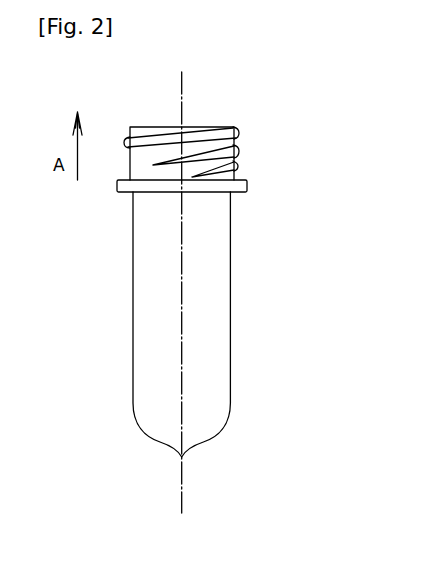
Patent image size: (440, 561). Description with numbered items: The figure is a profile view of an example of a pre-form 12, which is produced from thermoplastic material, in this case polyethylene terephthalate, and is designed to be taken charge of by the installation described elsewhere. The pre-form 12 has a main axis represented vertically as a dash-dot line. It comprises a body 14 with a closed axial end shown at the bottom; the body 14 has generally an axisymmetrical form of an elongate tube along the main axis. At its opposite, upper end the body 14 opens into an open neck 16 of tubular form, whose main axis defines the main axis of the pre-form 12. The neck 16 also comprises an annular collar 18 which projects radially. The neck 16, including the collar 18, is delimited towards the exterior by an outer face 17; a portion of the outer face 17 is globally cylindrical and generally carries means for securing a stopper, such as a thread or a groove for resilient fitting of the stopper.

The pre-form 12 is at (216, 292).
The body 14 is at (210, 314).
The neck 16 is at (217, 159).
The outer face 17 is at (238, 152).
The annular collar 18 is at (126, 192).